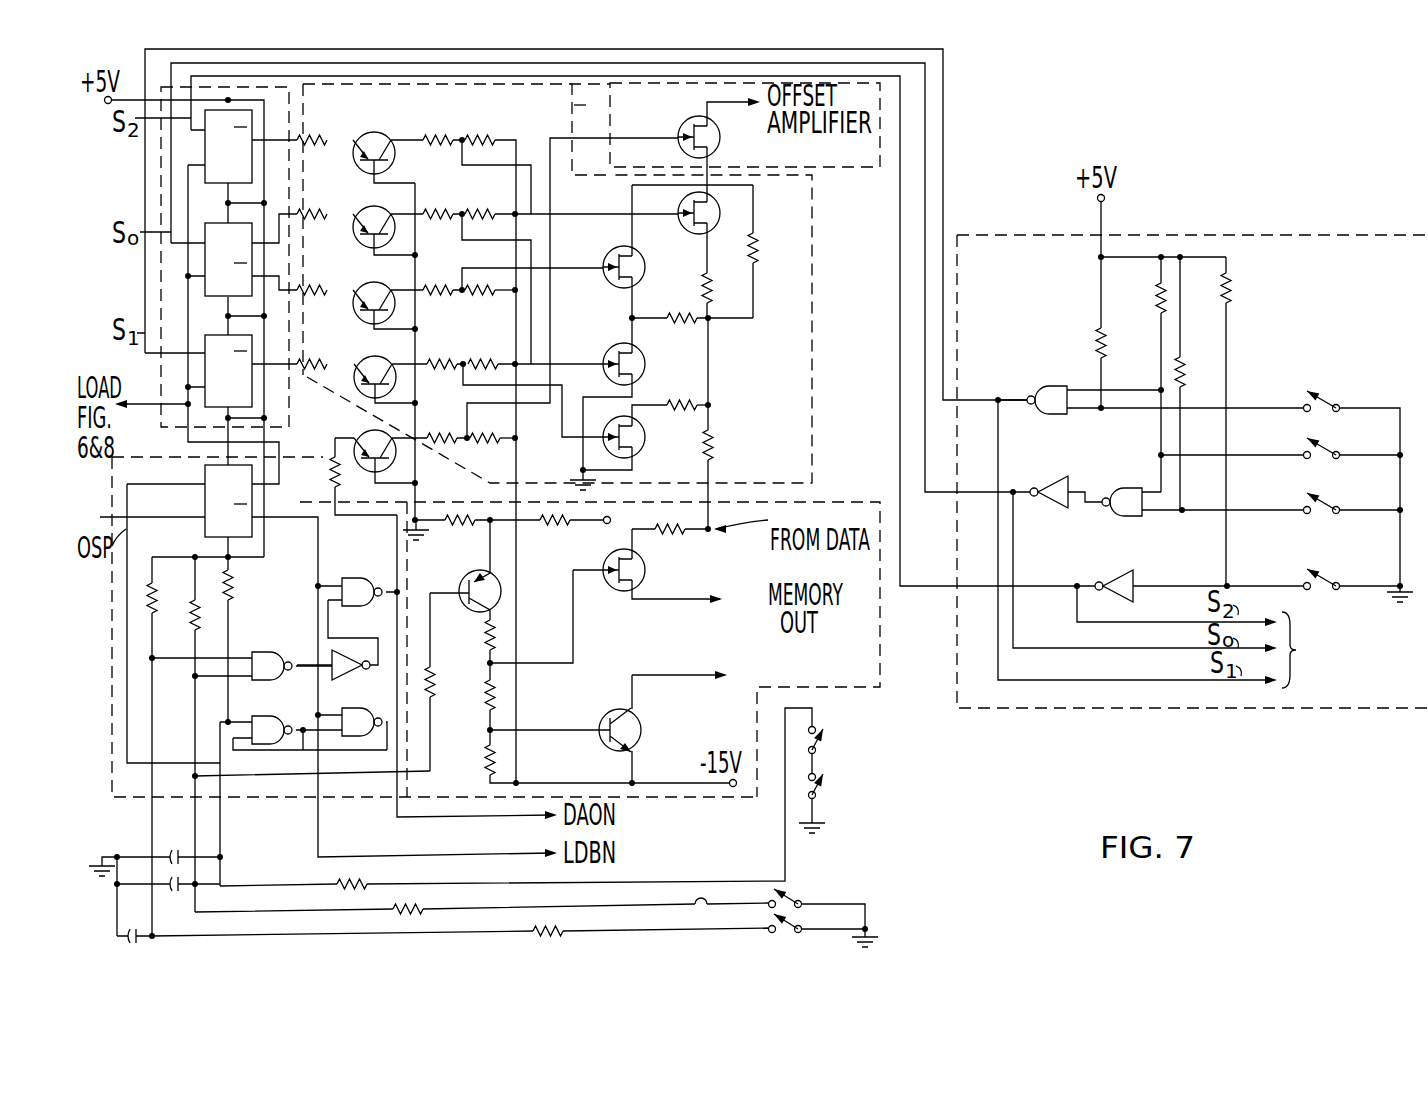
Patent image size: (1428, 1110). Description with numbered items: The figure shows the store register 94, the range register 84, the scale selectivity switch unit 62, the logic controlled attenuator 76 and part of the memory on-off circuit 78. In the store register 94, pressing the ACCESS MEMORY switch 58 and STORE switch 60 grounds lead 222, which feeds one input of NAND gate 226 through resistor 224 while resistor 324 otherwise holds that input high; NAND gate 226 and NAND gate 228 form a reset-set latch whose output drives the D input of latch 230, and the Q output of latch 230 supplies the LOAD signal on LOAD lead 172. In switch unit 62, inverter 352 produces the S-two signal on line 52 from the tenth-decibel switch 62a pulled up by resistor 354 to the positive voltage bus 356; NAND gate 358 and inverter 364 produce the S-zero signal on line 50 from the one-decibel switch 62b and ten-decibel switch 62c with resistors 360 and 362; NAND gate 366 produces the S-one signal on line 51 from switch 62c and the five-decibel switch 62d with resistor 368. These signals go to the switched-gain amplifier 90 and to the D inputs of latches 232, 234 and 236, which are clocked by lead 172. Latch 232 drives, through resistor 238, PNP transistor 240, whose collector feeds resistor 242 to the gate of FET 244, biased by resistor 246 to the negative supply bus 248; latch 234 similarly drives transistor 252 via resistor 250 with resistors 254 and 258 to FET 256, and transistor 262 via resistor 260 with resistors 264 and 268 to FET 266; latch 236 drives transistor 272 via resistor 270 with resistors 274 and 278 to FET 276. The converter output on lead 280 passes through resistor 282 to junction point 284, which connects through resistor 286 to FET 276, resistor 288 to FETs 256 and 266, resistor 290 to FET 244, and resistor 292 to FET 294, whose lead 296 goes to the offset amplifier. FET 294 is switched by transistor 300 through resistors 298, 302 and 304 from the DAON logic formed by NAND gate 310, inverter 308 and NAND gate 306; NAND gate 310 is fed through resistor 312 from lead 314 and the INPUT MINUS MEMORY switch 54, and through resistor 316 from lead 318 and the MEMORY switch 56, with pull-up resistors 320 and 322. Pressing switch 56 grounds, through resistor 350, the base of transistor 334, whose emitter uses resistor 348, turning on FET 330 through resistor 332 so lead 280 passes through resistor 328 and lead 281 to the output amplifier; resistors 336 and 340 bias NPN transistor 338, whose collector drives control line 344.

The latch 232 is at (205, 147).
The latch 234 is at (205, 260).
The latch 236 is at (205, 370).
The latch 230 is at (206, 506).
The range register 84 is at (160, 183).
The LOAD lead 172 is at (150, 408).
The resistor 238 is at (313, 138).
The PNP transistor 240 is at (395, 157).
The resistor 242 is at (437, 132).
The resistor 246 is at (488, 137).
The resistor 250 is at (330, 199).
The PNP transistor 252 is at (356, 232).
The resistor 254 is at (444, 210).
The resistor 258 is at (492, 210).
The resistor 260 is at (330, 279).
The PNP transistor 262 is at (395, 284).
The resistor 264 is at (438, 293).
The resistor 268 is at (490, 293).
The resistor 270 is at (312, 360).
The PNP transistor 272 is at (361, 340).
The resistor 274 is at (444, 362).
The resistor 278 is at (495, 357).
The resistor 298 is at (446, 432).
The resistor 302 is at (500, 430).
The PNP transistor 300 is at (362, 430).
The resistor 304 is at (332, 470).
The resistor 348 is at (453, 513).
The PNP transistor 334 is at (490, 571).
The resistor 350 is at (434, 672).
The resistor 332 is at (489, 639).
The resistor 336 is at (497, 706).
The resistor 340 is at (488, 752).
The negative supply bus 248 is at (521, 780).
The FET 330 is at (612, 592).
The lead 281 is at (688, 598).
The resistor 328 is at (662, 532).
The lead 280 is at (755, 514).
The control line 344 is at (668, 674).
The NPN transistor 338 is at (643, 723).
The FET 294 is at (718, 143).
The lead 296 is at (707, 104).
The FET 244 is at (718, 212).
The resistor 290 is at (712, 290).
The resistor 292 is at (757, 247).
The resistor 288 is at (697, 322).
The FET 266 is at (645, 262).
The FET 256 is at (612, 343).
The FET 276 is at (645, 440).
The resistor 286 is at (700, 389).
The junction point 284 is at (712, 405).
The resistor 282 is at (713, 443).
The logic controlled attenuator 76 is at (592, 129).
The memory on-off circuit 78 is at (884, 97).
The resistor 320 is at (150, 583).
The resistor 322 is at (204, 634).
The resistor 324 is at (234, 596).
The NAND gate 310 is at (267, 653).
The NAND gate 226 is at (261, 716).
The NAND gate 228 is at (368, 698).
The NAND gate 306 is at (357, 578).
The inverter 308 is at (350, 649).
The store register 94 is at (112, 775).
The resistor 224 is at (364, 883).
The lead 222 is at (647, 882).
The resistor 316 is at (411, 912).
The lead 318 is at (699, 910).
The resistor 312 is at (553, 934).
The lead 314 is at (663, 931).
The MEMORY switch 56 is at (875, 664).
The INPUT MINUS MEMORY switch 54 is at (790, 930).
The ACCESS MEMORY switch 58 is at (823, 732).
The STORE switch 60 is at (826, 781).
The positive voltage bus 356 is at (1103, 212).
The resistor 368 is at (1100, 332).
The resistor 362 is at (1158, 290).
The resistor 360 is at (1181, 357).
The resistor 354 is at (1229, 290).
The NAND gate 366 is at (1073, 361).
The S1 line 51 is at (1006, 398).
The S0 line 50 is at (978, 491).
The S2 line 52 is at (1036, 586).
The inverter 364 is at (1069, 461).
The NAND gate 358 is at (1125, 487).
The inverter 352 is at (1122, 570).
The 5 dB/DIV switch 62d is at (1322, 400).
The 10 dB/DIV switch 62c is at (1322, 453).
The 1 dB/DIV switch 62b is at (1322, 500).
The .1 dB/DIV switch 62a is at (1322, 573).
The scale selectivity switch unit 62 is at (1393, 709).
The switched-gain amplifier 90 is at (1352, 647).